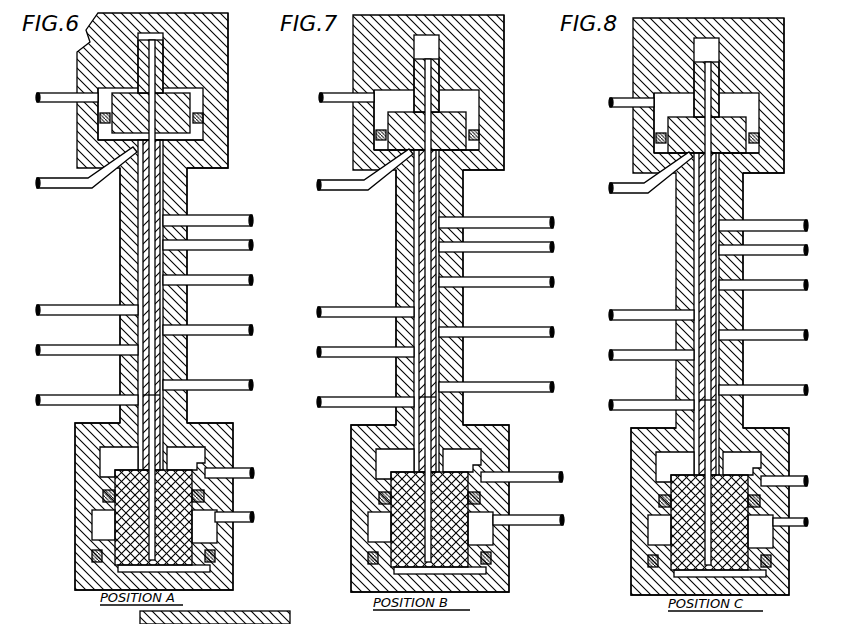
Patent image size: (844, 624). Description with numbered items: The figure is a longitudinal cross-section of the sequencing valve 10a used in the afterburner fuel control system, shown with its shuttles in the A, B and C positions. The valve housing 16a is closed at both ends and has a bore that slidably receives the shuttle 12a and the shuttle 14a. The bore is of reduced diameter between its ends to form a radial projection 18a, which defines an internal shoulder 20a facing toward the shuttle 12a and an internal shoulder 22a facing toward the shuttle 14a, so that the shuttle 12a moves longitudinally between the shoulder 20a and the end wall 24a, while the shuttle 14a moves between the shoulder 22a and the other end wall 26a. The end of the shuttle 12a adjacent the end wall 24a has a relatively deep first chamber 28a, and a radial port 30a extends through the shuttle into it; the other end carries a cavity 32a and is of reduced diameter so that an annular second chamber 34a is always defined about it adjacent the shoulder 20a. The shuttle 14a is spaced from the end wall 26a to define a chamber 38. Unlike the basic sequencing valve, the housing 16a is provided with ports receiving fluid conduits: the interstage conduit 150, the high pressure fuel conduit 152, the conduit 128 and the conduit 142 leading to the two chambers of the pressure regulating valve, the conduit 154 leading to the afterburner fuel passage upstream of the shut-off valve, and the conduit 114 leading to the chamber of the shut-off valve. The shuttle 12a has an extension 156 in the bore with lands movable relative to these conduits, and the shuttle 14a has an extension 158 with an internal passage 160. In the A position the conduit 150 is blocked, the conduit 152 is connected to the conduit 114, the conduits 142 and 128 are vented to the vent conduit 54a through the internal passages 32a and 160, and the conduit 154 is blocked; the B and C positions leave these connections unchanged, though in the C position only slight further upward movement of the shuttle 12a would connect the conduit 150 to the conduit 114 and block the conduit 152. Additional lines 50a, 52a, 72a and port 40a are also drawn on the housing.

In FIG. 6, the sequencing valve 10a is at (228, 70).
In FIG. 7, the sequencing valve 10a is at (452, 303).
In FIG. 8, the sequencing valve 10a is at (728, 301).
In FIG. 6, the shuttle 12a is at (198, 530).
In FIG. 7, the shuttle 12a is at (478, 519).
In FIG. 8, the shuttle 12a is at (664, 528).
In FIG. 6, the shuttle 14a is at (203, 104).
In FIG. 7, the shuttle 14a is at (469, 123).
In FIG. 8, the shuttle 14a is at (746, 132).
In FIG. 6, the valve housing 16a is at (232, 151).
In FIG. 7, the valve housing 16a is at (462, 303).
In FIG. 8, the valve housing 16a is at (729, 306).
In FIG. 6, the radial projection 18a is at (187, 346).
In FIG. 7, the radial projection 18a is at (486, 297).
In FIG. 8, the radial projection 18a is at (767, 300).
In FIG. 6, the internal shoulder 20a is at (100, 527).
In FIG. 7, the internal shoulder 20a is at (351, 527).
In FIG. 8, the internal shoulder 20a is at (630, 530).
In FIG. 6, the internal shoulder 22a is at (195, 137).
In FIG. 7, the internal shoulder 22a is at (465, 143).
In FIG. 8, the internal shoulder 22a is at (738, 154).
In FIG. 6, the end wall 24a is at (180, 572).
In FIG. 7, the end wall 24a is at (472, 587).
In FIG. 8, the end wall 24a is at (678, 592).
In FIG. 6, the end wall 26a is at (198, 92).
In FIG. 7, the end wall 26a is at (465, 110).
In FIG. 8, the end wall 26a is at (678, 108).
In FIG. 6, the first chamber 28a is at (155, 500).
In FIG. 7, the first chamber 28a is at (494, 310).
In FIG. 8, the first chamber 28a is at (764, 313).
In FIG. 6, the radial port 30a is at (165, 396).
In FIG. 7, the radial port 30a is at (466, 406).
In FIG. 8, the radial port 30a is at (744, 406).
In FIG. 6, the cavity 32a is at (150, 253).
In FIG. 7, the cavity 32a is at (395, 311).
In FIG. 8, the cavity 32a is at (672, 314).
In FIG. 6, the second chamber 34a is at (100, 530).
In FIG. 7, the second chamber 34a is at (400, 529).
In FIG. 8, the second chamber 34a is at (680, 531).
In FIG. 6, the chamber 38 is at (118, 93).
In FIG. 7, the chamber 38 is at (355, 106).
In FIG. 8, the chamber 38 is at (629, 123).
In FIG. 6, the port 40a is at (224, 383).
In FIG. 7, the port 40a is at (496, 372).
In FIG. 8, the port 40a is at (763, 378).
In FIG. 6, the inlet line 50a is at (40, 102).
In FIG. 7, the inlet line 50a is at (341, 111).
In FIG. 8, the inlet line 50a is at (610, 99).
In FIG. 6, the outlet line 52a is at (254, 516).
In FIG. 7, the outlet line 52a is at (528, 507).
In FIG. 8, the outlet line 52a is at (798, 532).
In FIG. 6, the vent conduit 54a is at (47, 188).
In FIG. 7, the vent conduit 54a is at (365, 181).
In FIG. 8, the vent conduit 54a is at (651, 183).
In FIG. 6, the port 72a is at (55, 396).
In FIG. 7, the port 72a is at (365, 388).
In FIG. 8, the port 72a is at (651, 391).
In FIG. 6, the conduit 114 is at (230, 327).
In FIG. 7, the conduit 114 is at (496, 321).
In FIG. 8, the conduit 114 is at (763, 347).
In FIG. 6, the conduit 128 is at (228, 216).
In FIG. 7, the conduit 128 is at (496, 209).
In FIG. 8, the conduit 128 is at (763, 211).
In FIG. 6, the conduit 142 is at (243, 276).
In FIG. 7, the conduit 142 is at (499, 270).
In FIG. 8, the conduit 142 is at (763, 273).
In FIG. 6, the interstage conduit 150 is at (45, 348).
In FIG. 7, the interstage conduit 150 is at (363, 339).
In FIG. 8, the interstage conduit 150 is at (638, 342).
In FIG. 6, the high pressure fuel conduit 152 is at (78, 305).
In FIG. 7, the high pressure fuel conduit 152 is at (365, 296).
In FIG. 8, the high pressure fuel conduit 152 is at (647, 300).
In FIG. 6, the conduit 154 is at (243, 241).
In FIG. 7, the conduit 154 is at (513, 237).
In FIG. 8, the conduit 154 is at (763, 242).
In FIG. 6, the extension 156 is at (143, 424).
In FIG. 6, the extension 158 is at (189, 168).
In FIG. 6, the internal passage 160 is at (152, 181).
In FIG. 7, the internal passage 160 is at (453, 297).